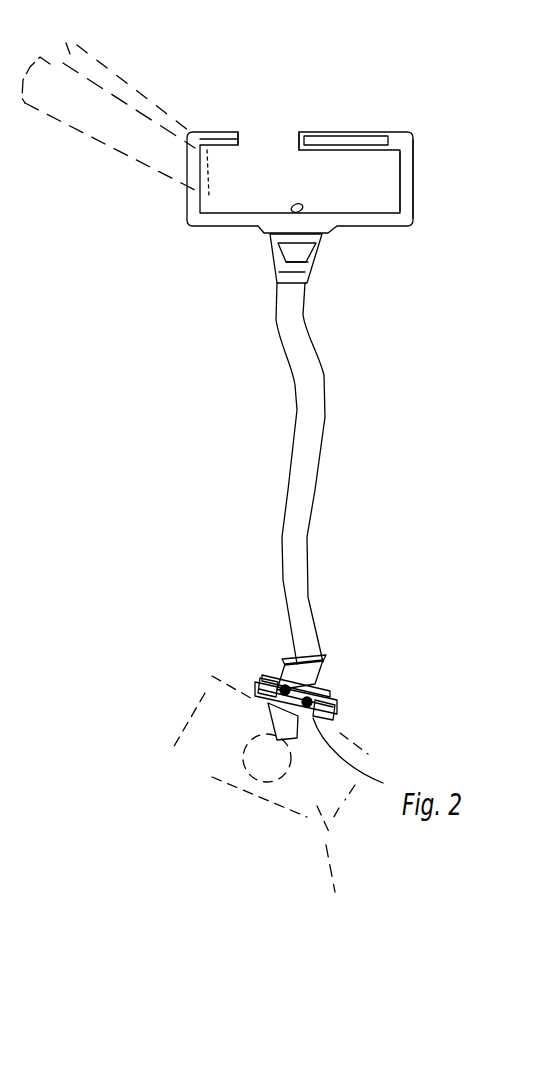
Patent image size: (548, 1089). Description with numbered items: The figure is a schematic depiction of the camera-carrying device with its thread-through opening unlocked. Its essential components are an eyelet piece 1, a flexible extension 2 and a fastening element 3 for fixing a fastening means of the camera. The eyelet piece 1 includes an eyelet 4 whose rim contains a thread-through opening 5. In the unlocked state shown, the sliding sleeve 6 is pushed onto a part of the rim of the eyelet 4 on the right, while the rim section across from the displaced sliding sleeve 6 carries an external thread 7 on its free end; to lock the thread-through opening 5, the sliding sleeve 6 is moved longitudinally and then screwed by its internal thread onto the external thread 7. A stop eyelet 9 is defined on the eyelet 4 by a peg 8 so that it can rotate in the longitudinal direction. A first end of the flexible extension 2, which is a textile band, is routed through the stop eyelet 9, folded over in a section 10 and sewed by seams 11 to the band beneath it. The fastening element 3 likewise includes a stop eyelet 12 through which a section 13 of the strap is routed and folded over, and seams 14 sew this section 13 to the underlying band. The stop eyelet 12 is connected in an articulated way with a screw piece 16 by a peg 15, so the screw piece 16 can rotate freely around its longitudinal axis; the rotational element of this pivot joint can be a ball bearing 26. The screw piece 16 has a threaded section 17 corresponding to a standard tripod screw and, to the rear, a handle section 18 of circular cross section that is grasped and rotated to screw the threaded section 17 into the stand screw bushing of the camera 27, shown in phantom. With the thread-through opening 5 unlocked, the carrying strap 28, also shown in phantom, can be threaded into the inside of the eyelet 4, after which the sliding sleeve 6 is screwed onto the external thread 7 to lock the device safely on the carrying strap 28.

The eyelet piece 1 is at (288, 129).
The flexible extension 2 is at (318, 422).
The fastening element 3 is at (253, 691).
The eyelet 4 is at (411, 158).
The thread-through opening 5 is at (262, 132).
The sliding sleeve 6 is at (341, 130).
The external thread 7 is at (222, 131).
The peg 8 is at (300, 207).
The stop eyelet 9 is at (324, 253).
The fold-over section 10 is at (290, 263).
The seams 11 is at (297, 270).
The stop eyelet 12 is at (328, 690).
The section 13 is at (328, 663).
The seams 14 is at (322, 667).
The peg 15 is at (297, 661).
The screw piece 16 is at (258, 705).
The threaded section 17 is at (268, 707).
The handle section 18 is at (330, 717).
The ball bearing 26 is at (371, 757).
The camera 27 is at (346, 889).
The carrying strap 28 is at (116, 70).